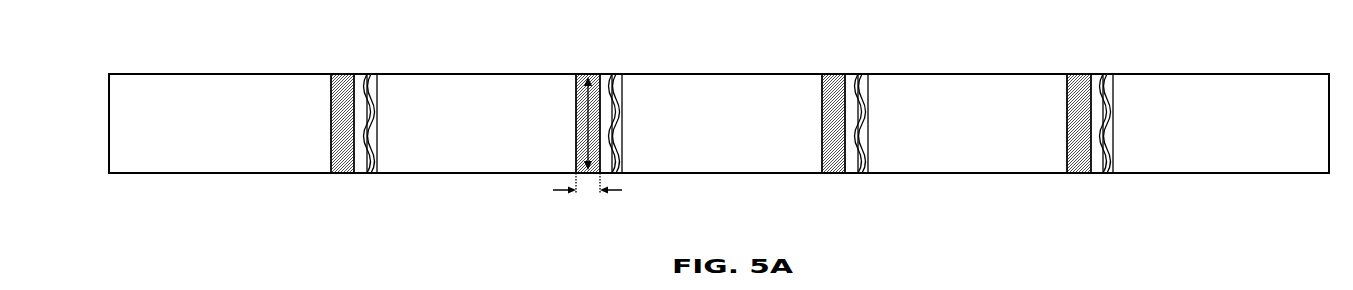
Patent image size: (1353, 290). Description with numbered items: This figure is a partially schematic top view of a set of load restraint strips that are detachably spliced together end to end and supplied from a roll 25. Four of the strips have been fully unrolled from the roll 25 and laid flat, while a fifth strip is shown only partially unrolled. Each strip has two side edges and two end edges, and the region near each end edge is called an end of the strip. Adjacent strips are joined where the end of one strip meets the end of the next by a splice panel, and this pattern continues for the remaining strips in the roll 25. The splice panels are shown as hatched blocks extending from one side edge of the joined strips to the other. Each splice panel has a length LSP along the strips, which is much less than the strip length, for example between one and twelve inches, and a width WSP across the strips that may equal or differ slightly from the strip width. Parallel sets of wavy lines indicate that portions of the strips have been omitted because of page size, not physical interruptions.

The roll 25 is at (141, 182).
The splice panel width WSP is at (577, 89).
The splice panel length LSP is at (603, 190).